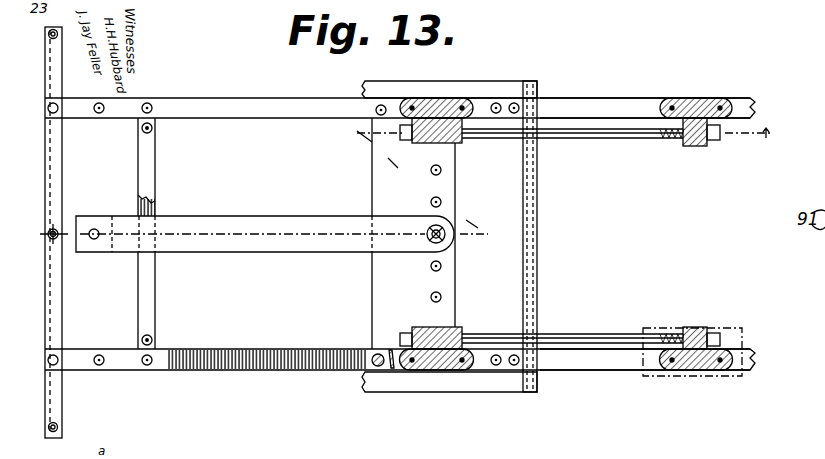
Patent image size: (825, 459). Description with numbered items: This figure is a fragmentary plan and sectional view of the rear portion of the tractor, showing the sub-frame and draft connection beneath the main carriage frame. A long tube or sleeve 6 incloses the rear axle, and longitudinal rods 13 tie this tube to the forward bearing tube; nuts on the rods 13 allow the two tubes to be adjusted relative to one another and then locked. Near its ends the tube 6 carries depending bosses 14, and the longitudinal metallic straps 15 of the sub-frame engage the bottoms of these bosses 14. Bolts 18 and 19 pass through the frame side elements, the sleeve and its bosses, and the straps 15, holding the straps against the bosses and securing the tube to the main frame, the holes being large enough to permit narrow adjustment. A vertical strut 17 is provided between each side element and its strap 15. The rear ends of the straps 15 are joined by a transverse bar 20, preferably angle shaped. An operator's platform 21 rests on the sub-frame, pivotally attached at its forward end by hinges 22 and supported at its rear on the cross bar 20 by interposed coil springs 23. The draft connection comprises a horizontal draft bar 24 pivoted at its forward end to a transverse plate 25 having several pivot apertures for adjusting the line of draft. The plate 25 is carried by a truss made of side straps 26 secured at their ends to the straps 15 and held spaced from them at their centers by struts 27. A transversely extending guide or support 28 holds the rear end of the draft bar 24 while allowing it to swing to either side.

The tube or sleeve 6 is at (416, 144).
The longitudinal rods 13 is at (612, 139).
The depending bosses 14 is at (66, 195).
The longitudinal metallic straps 15 is at (618, 104).
The vertical strut 17 is at (746, 329).
The bolts 18 is at (418, 97).
The bolts 19 is at (676, 106).
The transverse bar 20 is at (57, 313).
The platform 21 is at (392, 92).
The hinges 22 is at (540, 98).
The coil springs 23 is at (57, 238).
The draft bar 24 is at (224, 253).
The transverse plate 25 is at (441, 296).
The side straps 26 is at (278, 371).
The struts 27 is at (380, 353).
The guide or support 28 is at (150, 182).